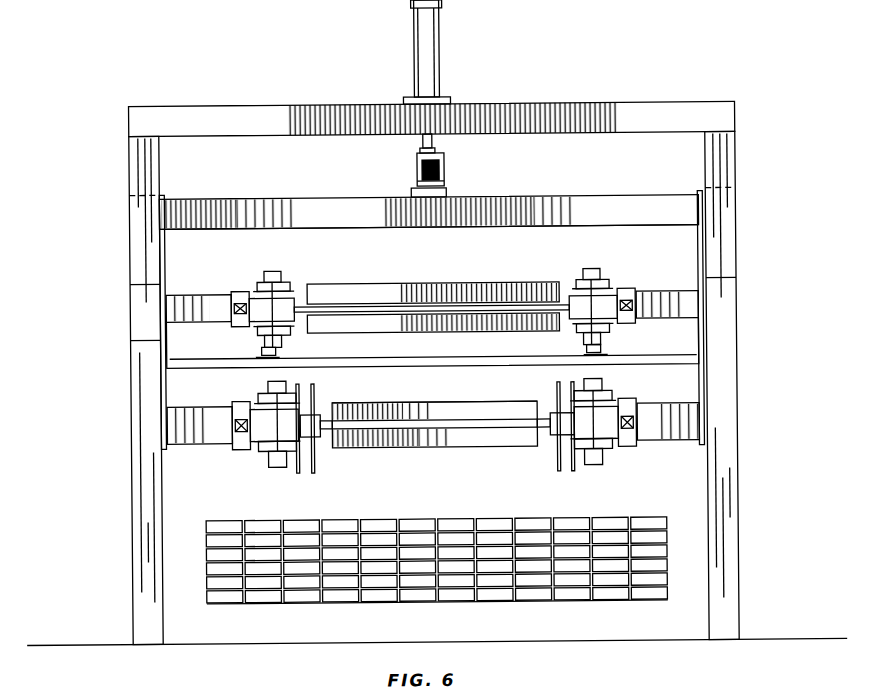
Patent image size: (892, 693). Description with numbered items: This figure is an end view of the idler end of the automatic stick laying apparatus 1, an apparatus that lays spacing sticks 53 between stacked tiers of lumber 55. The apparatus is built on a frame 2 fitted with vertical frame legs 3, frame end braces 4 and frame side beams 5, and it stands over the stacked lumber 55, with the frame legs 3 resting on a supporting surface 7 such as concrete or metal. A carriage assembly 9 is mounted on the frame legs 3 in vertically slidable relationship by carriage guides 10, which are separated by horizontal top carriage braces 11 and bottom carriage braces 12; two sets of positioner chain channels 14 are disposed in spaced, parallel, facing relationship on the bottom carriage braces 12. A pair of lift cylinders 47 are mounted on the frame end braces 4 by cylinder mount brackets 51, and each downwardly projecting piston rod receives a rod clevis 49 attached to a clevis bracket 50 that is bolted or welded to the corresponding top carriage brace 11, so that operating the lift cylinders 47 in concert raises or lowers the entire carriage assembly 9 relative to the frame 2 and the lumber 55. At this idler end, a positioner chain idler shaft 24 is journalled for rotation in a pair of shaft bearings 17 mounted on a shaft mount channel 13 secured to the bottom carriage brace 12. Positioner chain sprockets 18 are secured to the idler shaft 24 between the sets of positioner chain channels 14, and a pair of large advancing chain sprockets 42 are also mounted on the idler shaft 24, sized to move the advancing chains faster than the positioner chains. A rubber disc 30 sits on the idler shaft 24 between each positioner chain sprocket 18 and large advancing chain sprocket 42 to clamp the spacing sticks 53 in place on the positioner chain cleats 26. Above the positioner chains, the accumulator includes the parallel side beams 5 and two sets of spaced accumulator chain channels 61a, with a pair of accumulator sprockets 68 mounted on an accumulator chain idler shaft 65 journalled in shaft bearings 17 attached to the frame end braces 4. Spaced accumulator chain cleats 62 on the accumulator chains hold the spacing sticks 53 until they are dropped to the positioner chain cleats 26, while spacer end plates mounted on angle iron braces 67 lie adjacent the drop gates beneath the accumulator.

The automatic stick laying apparatus 1 is at (422, 327).
The frame 2 is at (131, 160).
The vertical frame legs 3 is at (129, 188).
The frame end braces 4 is at (534, 104).
The frame side beams 5 is at (166, 330).
The supporting surface 7 is at (335, 628).
The carriage assembly 9 is at (215, 198).
The carriage guides 10 is at (166, 236).
The top carriage braces 11 is at (534, 196).
The bottom carriage braces 12 is at (205, 383).
The shaft mount channel 13 is at (428, 290).
The positioner chain channels 14 is at (266, 398).
The shaft bearings 17 is at (232, 313).
The positioner chain sprockets 18 is at (322, 415).
The positioner chain idler shaft 24 is at (443, 402).
The positioner chain cleats 26 is at (300, 392).
The rubber disc 30 is at (297, 472).
The large advancing chain sprockets 42 is at (313, 472).
The lift cylinders 47 is at (441, 47).
The rod clevis 49 is at (446, 170).
The clevis bracket 50 is at (418, 190).
The cylinder mount brackets 51 is at (452, 100).
The spacing sticks 53 is at (205, 591).
The lumber 55 is at (272, 601).
The accumulator chain channels 61a is at (262, 282).
The accumulator chain cleats 62 is at (276, 270).
The accumulator chain idler shaft 65 is at (372, 287).
The angle iron braces 67 is at (548, 357).
The accumulator sprockets 68 is at (305, 313).